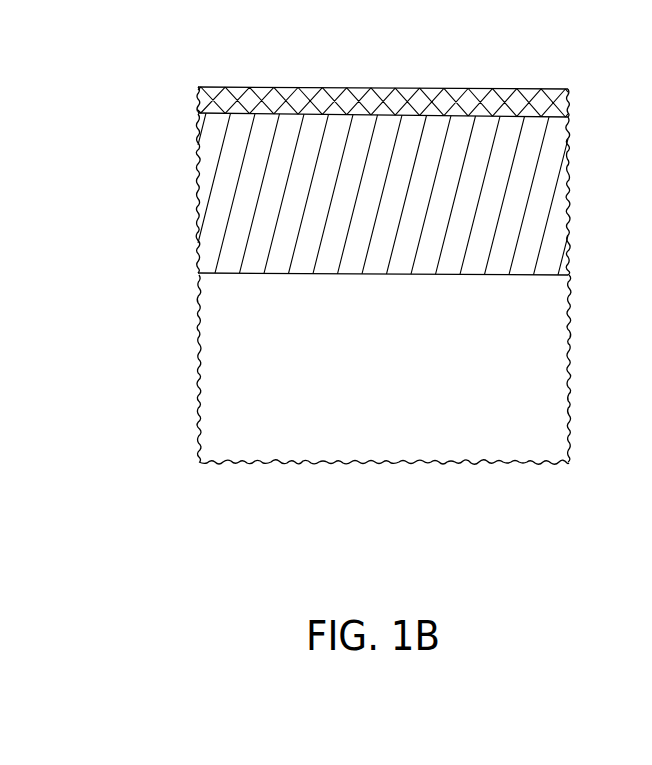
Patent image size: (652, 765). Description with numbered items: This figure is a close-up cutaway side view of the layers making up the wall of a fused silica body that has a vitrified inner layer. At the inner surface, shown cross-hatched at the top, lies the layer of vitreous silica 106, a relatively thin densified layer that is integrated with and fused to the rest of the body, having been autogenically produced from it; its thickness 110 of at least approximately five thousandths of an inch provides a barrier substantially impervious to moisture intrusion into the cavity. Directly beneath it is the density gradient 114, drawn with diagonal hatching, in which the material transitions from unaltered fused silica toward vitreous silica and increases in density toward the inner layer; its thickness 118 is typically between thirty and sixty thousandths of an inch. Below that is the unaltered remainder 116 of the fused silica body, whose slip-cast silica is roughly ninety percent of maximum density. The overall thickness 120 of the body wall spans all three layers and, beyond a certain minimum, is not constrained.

The layer of vitreous silica 106 is at (569, 102).
The density gradient 114 is at (557, 195).
The unaltered remainder of the fused silica body 116 is at (558, 382).
The thickness of vitreous layer 110 is at (180, 88).
The thickness of density gradient zone 118 is at (182, 118).
The overall thickness of body wall 120 is at (182, 277).